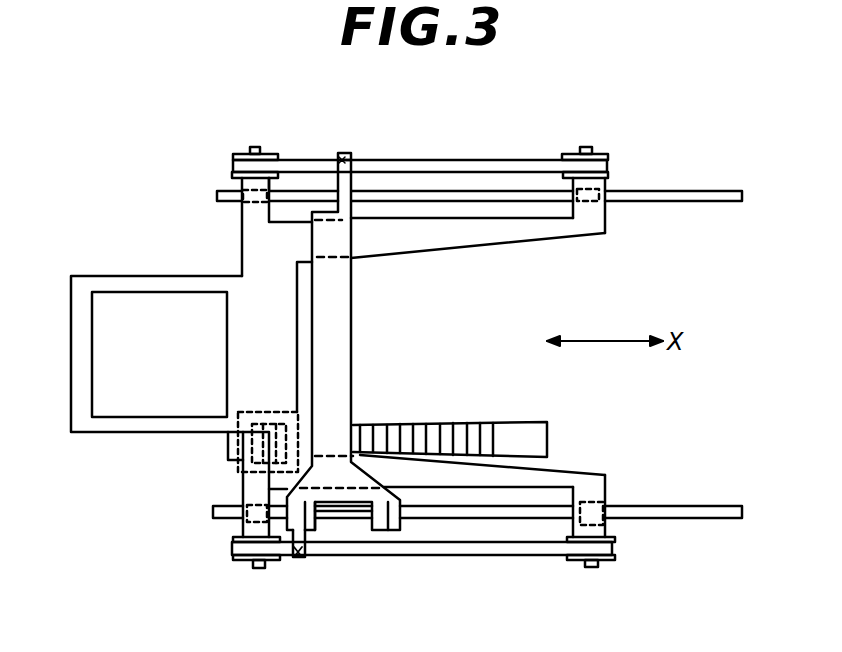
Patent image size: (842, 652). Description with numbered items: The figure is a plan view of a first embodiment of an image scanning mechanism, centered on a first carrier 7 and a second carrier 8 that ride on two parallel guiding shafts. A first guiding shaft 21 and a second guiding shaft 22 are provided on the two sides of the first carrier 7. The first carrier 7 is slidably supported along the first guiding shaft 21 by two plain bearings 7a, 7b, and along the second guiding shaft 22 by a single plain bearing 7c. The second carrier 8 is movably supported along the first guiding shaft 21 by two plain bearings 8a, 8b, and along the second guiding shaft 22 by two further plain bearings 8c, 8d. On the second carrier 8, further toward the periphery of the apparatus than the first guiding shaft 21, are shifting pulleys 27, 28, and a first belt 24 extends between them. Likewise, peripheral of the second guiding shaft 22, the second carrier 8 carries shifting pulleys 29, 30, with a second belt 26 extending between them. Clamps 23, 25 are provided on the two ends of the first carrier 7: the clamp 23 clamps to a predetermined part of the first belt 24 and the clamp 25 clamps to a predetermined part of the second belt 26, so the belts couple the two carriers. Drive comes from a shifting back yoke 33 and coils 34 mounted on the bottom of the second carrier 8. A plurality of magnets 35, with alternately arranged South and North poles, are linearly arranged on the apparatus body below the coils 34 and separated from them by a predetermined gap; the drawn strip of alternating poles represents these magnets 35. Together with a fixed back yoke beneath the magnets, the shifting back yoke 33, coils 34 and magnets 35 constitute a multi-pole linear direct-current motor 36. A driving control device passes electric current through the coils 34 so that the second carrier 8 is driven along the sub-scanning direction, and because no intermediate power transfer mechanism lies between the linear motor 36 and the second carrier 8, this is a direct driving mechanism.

The first carrier 7 is at (342, 319).
The plain bearing 7a is at (305, 517).
The plain bearing 7b is at (388, 520).
The plain bearing 7c is at (348, 198).
The second carrier 8 is at (125, 276).
The plain bearing 8a is at (233, 525).
The plain bearing 8b is at (590, 500).
The plain bearing 8c is at (240, 192).
The plain bearing 8d is at (603, 190).
The first guiding shaft 21 is at (710, 506).
The second guiding shaft 22 is at (715, 191).
The clamp 23 is at (297, 558).
The first belt 24 is at (488, 555).
The clamp 25 is at (342, 160).
The second belt 26 is at (487, 160).
The shifting pulley 27 is at (247, 562).
The shifting pulley 28 is at (590, 560).
The shifting pulley 29 is at (270, 153).
The shifting pulley 30 is at (601, 153).
The shifting back yoke 33 is at (240, 400).
The coils 34 is at (227, 452).
The magnets 35 is at (443, 423).
The multi-pole linear direct-current motor 36 is at (534, 421).